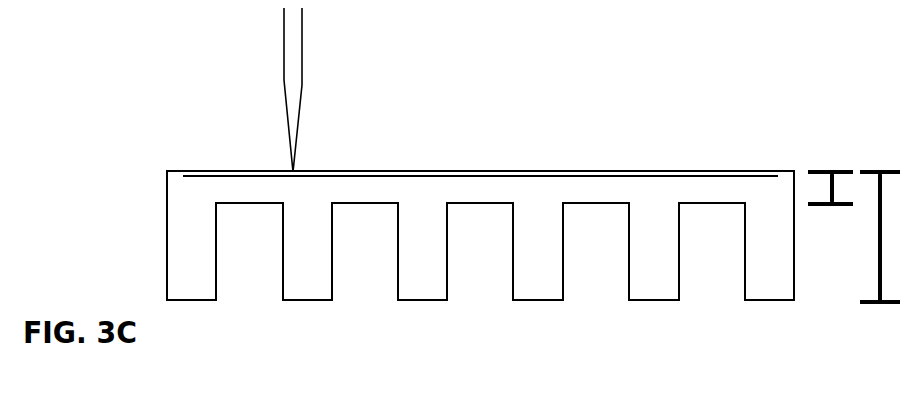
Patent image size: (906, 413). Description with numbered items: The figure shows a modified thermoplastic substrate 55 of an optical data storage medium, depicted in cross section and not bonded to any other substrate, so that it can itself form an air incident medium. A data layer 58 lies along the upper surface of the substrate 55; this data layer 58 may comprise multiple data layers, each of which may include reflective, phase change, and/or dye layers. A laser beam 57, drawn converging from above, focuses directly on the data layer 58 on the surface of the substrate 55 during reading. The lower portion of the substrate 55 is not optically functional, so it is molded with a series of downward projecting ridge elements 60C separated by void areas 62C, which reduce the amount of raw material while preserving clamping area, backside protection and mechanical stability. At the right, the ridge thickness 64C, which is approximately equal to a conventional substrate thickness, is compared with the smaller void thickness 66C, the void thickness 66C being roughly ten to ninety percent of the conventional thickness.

The modified thermoplastic substrate 55 is at (167, 228).
The data layer 58 is at (628, 172).
The laser beam 57 is at (284, 65).
The ridge element 60C is at (397, 253).
The void area 62C is at (480, 267).
The void thickness 66C is at (826, 189).
The ridge thickness 64C is at (880, 262).